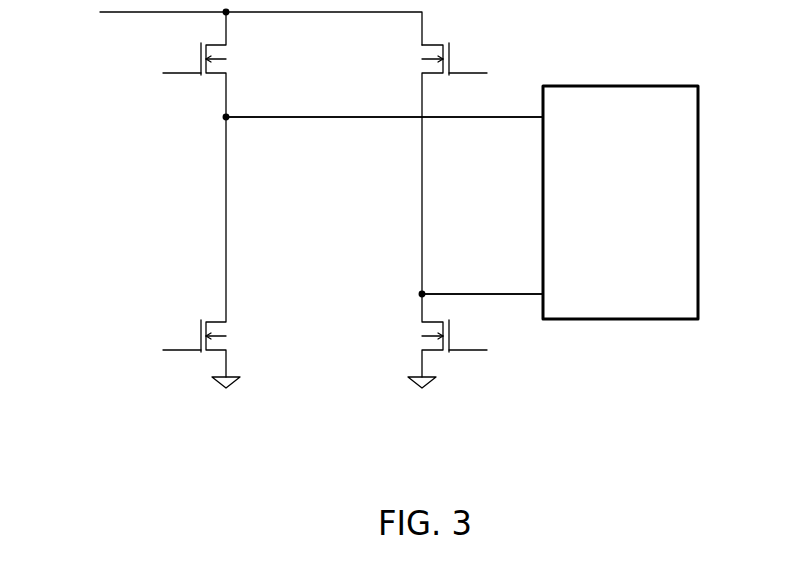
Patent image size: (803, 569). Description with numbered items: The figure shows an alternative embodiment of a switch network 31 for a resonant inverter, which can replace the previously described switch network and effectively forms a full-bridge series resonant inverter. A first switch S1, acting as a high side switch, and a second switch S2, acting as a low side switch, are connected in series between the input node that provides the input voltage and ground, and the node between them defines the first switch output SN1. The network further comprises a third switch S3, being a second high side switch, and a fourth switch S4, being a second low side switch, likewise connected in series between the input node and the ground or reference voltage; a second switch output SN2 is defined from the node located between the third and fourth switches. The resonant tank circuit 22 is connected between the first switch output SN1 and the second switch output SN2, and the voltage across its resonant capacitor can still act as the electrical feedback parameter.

The resonant tank circuit 22 is at (620, 202).
The switch network 31 is at (281, 440).
The first switch S1 is at (210, 64).
The second switch S2 is at (210, 252).
The third switch S3 is at (457, 80).
The fourth switch S4 is at (447, 252).
The first switch output SN1 is at (360, 119).
The second switch output SN2 is at (457, 295).